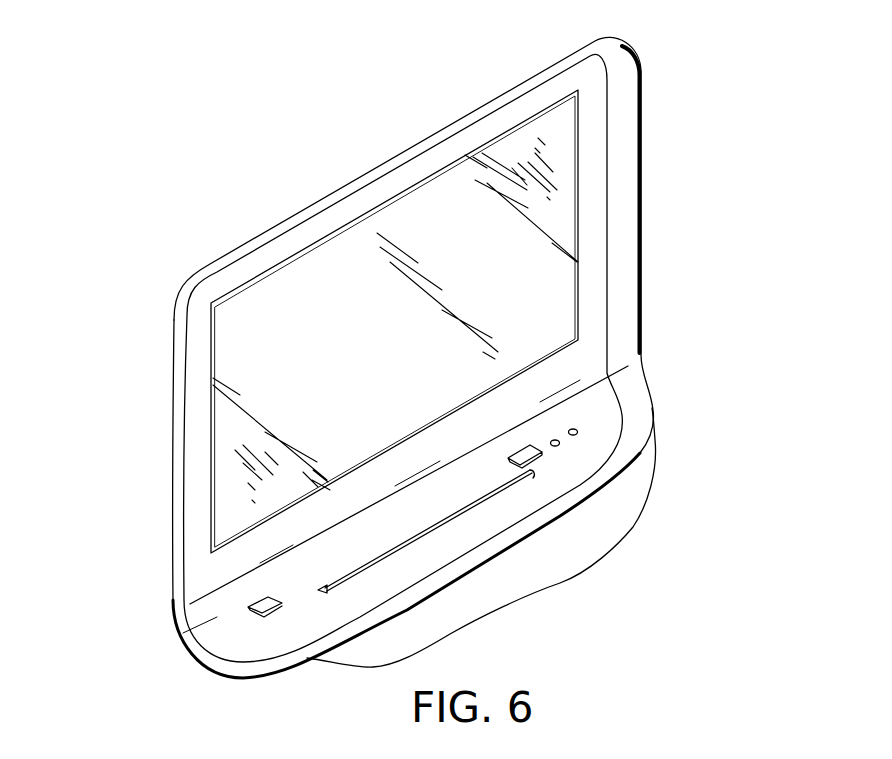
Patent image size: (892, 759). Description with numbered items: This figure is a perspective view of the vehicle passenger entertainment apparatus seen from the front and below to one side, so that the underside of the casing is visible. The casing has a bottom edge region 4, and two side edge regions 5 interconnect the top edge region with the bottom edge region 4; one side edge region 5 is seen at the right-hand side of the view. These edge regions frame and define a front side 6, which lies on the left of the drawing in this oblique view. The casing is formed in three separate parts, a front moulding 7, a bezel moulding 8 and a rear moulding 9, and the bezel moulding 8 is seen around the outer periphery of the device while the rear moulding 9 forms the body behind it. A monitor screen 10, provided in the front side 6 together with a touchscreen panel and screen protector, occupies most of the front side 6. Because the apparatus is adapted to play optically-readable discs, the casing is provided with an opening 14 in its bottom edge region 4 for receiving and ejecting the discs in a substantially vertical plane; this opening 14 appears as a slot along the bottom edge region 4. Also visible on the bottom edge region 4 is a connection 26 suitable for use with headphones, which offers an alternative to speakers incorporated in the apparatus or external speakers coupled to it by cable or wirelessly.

The bottom edge region 4 is at (302, 603).
The side edge region 5 is at (643, 207).
The front side 6 is at (197, 440).
The front moulding 7 is at (227, 282).
The bezel moulding 8 is at (430, 135).
The rear moulding 9 is at (627, 493).
The monitor screen 10 is at (325, 255).
The opening 14 is at (417, 537).
The connection 26 is at (577, 433).